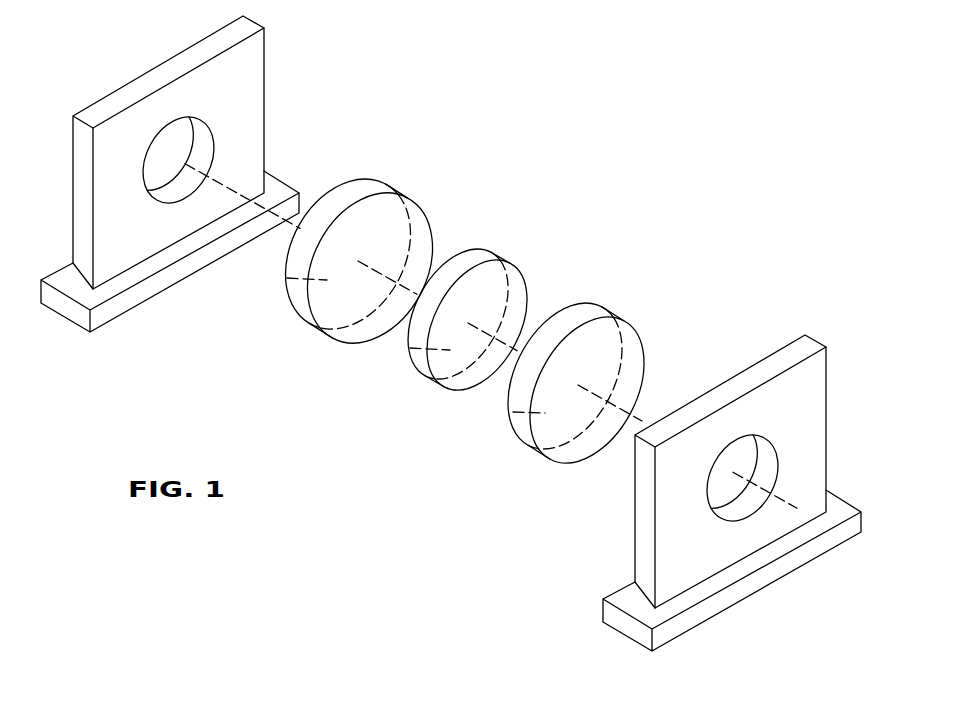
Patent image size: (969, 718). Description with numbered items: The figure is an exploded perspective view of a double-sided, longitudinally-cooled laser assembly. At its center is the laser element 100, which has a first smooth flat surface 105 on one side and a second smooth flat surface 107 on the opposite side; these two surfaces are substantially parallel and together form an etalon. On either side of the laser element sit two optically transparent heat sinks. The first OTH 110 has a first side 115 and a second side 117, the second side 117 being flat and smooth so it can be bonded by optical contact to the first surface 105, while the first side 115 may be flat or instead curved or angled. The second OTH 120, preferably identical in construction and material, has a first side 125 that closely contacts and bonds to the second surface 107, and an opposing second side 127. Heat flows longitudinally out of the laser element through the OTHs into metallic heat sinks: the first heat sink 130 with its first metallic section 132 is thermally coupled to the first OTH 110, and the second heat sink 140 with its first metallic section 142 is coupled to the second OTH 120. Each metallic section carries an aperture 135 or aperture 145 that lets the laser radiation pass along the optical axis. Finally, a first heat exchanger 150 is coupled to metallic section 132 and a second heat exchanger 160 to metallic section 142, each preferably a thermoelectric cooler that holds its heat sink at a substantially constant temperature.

The laser element 100 is at (456, 308).
The first smooth flat surface 105 is at (410, 348).
The second smooth flat surface 107 is at (522, 283).
The first OTH 110 is at (349, 254).
The first side 115 is at (287, 278).
The second side 117 is at (420, 225).
The second OTH 120 is at (571, 375).
The first side 125 is at (515, 412).
The second side 127 is at (640, 355).
The first heat sink 130 is at (160, 152).
The first metallic section 132 is at (139, 155).
The aperture 135 is at (212, 133).
The second heat sink 140 is at (730, 431).
The first metallic section 142 is at (704, 472).
The aperture 145 is at (767, 448).
The first heat exchanger 150 is at (58, 305).
The second heat exchanger 160 is at (603, 613).